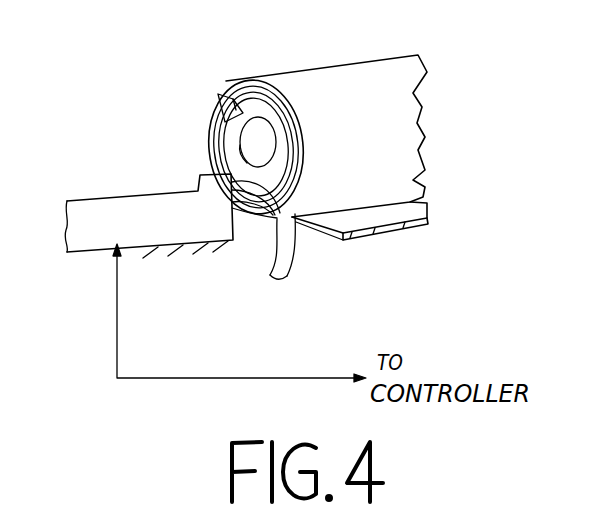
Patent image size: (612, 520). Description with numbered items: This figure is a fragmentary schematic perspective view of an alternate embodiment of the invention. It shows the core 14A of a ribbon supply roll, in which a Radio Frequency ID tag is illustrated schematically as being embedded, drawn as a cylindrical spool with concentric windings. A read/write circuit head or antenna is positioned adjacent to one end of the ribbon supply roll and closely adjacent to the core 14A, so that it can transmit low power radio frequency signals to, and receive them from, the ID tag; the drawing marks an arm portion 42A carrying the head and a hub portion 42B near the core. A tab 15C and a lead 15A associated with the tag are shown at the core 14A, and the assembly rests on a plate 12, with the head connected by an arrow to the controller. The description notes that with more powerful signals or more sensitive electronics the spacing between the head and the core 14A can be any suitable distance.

The base plate 12 is at (325, 237).
The core of the ribbon supply roll 14A is at (276, 90).
The lead wire 15A is at (270, 275).
The contact tab 15C is at (219, 94).
The head arm 42A is at (197, 175).
The hub 42B is at (240, 145).